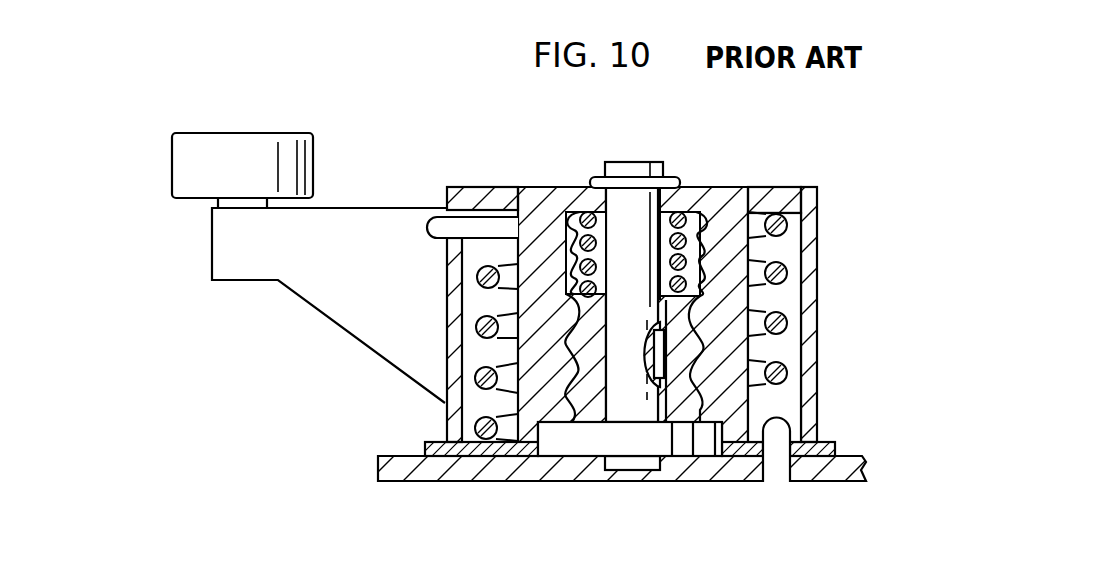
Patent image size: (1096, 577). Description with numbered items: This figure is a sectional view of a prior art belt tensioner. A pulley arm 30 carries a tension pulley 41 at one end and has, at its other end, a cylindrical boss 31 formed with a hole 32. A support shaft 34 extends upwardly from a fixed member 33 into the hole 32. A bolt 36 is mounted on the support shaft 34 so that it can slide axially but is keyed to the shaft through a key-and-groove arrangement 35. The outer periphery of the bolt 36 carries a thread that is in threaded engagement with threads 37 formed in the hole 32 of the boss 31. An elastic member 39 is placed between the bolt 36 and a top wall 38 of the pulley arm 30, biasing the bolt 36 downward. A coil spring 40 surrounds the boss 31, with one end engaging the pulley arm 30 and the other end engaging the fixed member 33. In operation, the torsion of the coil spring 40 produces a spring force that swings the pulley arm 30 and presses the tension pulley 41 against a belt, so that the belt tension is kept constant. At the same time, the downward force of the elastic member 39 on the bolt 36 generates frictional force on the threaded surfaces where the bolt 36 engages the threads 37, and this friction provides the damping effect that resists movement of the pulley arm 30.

The pulley arm 30 is at (337, 292).
The cylindrical boss 31 is at (718, 302).
The hole 32 is at (568, 236).
The fixed member 33 is at (533, 470).
The support shaft 34 is at (632, 208).
The key-and-groove arrangement 35 is at (668, 351).
The bolt 36 is at (672, 427).
The threads 37 is at (717, 271).
The top wall 38 is at (582, 198).
The elastic member 39 is at (700, 213).
The coil spring 40 is at (483, 378).
The tension pulley 41 is at (290, 157).